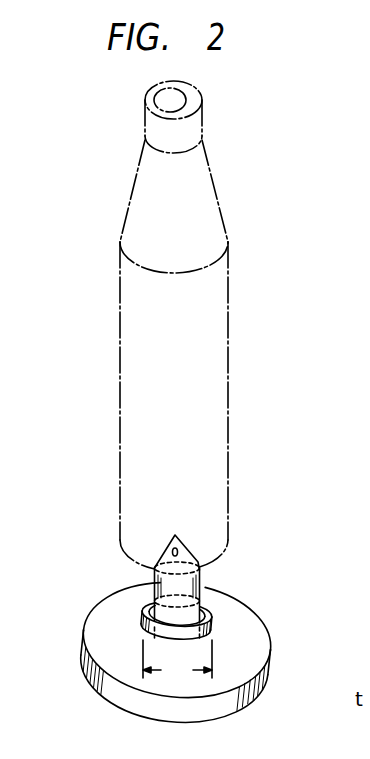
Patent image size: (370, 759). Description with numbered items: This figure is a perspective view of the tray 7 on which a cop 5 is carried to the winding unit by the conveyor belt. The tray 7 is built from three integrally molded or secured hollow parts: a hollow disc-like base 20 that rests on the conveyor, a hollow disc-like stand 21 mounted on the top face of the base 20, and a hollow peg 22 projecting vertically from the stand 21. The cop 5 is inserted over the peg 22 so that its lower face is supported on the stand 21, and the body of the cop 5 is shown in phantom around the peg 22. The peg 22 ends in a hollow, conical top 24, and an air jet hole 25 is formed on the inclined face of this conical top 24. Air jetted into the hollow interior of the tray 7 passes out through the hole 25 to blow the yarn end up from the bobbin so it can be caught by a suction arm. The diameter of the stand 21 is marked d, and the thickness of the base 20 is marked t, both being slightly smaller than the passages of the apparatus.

The cop 5 is at (228, 295).
The tray 7 is at (68, 664).
The hollow disc-like base 20 is at (143, 700).
The hollow disc-like stand 21 is at (207, 637).
The hollow peg 22 is at (172, 583).
The hollow conical top 24 is at (185, 560).
The air jet hole 25 is at (168, 546).